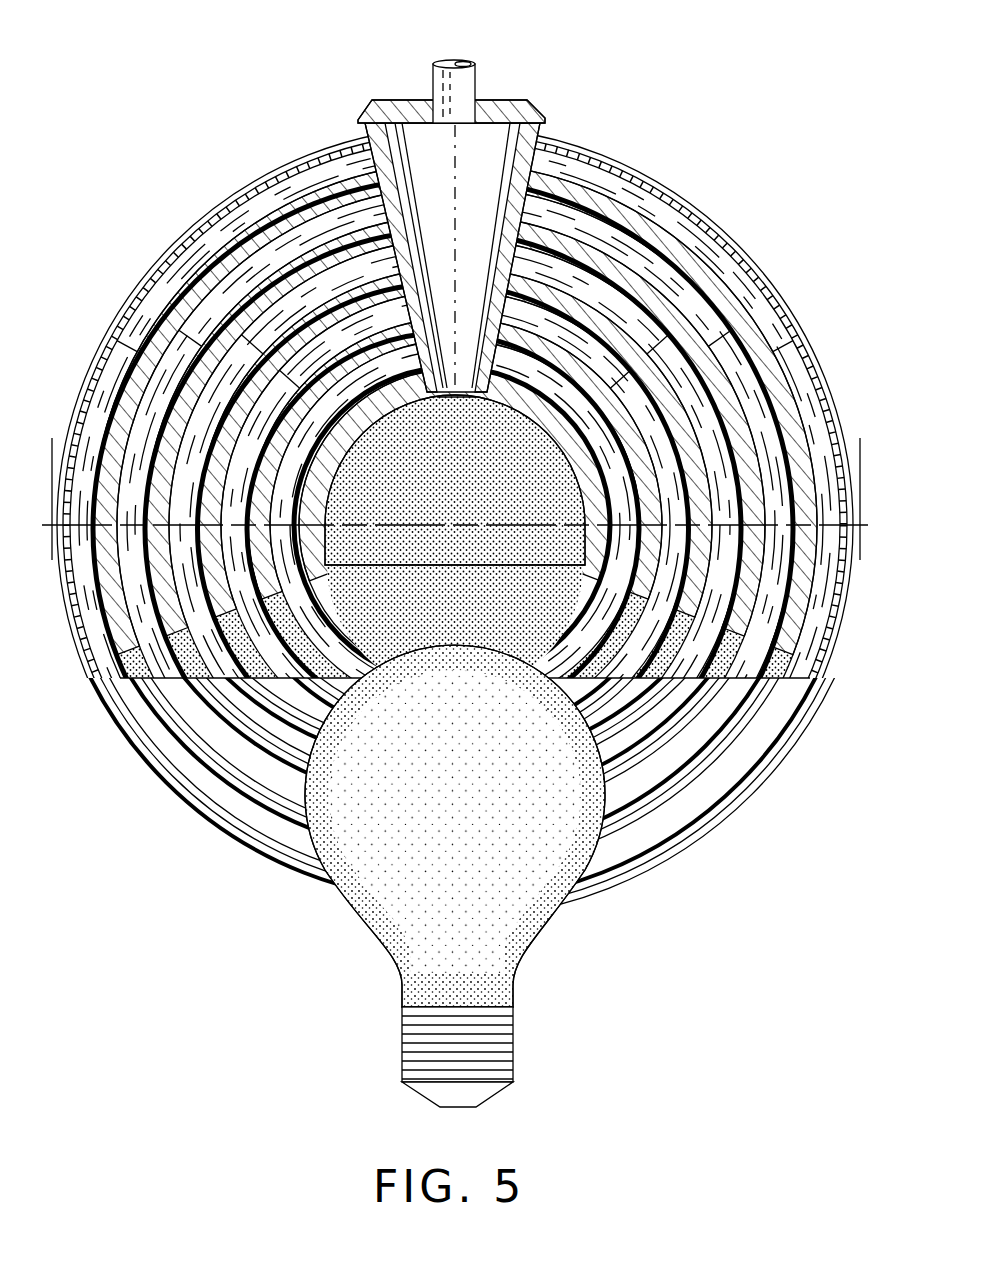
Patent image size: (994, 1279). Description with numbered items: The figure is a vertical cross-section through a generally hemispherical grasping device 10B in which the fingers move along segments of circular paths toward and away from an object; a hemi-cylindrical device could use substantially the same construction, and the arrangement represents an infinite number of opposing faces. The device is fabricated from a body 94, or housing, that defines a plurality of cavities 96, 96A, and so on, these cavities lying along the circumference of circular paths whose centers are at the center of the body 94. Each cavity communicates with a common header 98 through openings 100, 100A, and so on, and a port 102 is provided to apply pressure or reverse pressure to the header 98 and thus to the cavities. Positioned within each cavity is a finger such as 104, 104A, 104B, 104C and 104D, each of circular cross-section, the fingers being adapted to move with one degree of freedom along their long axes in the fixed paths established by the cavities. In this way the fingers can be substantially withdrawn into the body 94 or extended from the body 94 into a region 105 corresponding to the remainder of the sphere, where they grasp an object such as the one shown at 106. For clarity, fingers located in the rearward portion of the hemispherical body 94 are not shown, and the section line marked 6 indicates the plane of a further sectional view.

The grasping device 10B is at (654, 80).
The body 94 is at (212, 212).
The cavity 96 is at (685, 217).
The cavity 96A is at (597, 228).
The common header 98 is at (406, 128).
The opening 100 is at (503, 145).
The opening 100A is at (500, 195).
The port 102 is at (450, 62).
The finger 104 is at (790, 705).
The finger 104A is at (715, 705).
The finger 104B is at (668, 700).
The finger 104C is at (603, 697).
The finger 104D is at (582, 683).
The region 105 is at (308, 784).
The object 106 is at (517, 968).
The section line 6- 6 is at (454, 483).